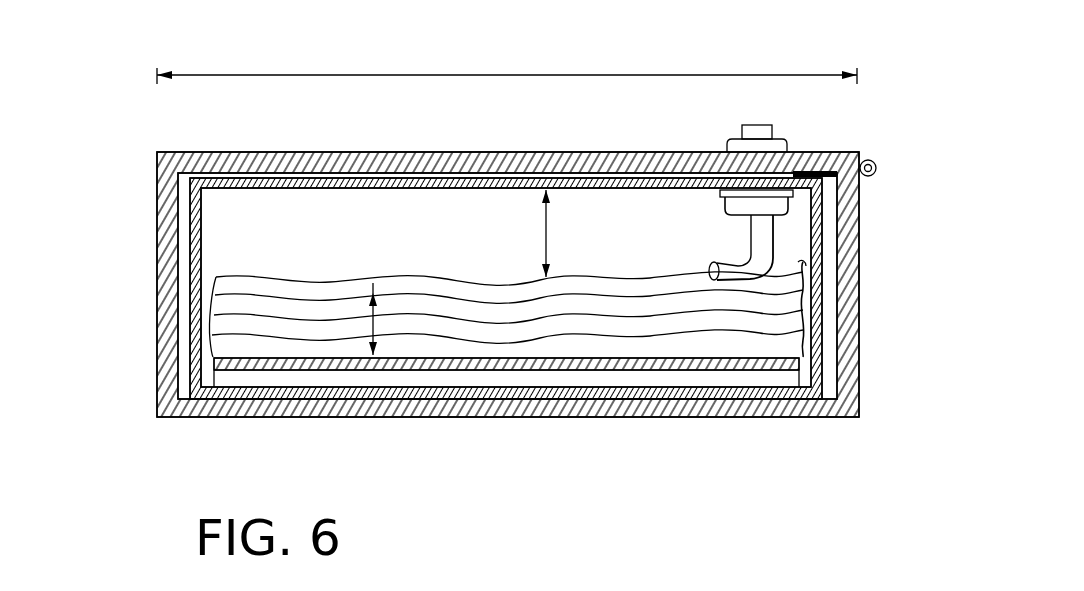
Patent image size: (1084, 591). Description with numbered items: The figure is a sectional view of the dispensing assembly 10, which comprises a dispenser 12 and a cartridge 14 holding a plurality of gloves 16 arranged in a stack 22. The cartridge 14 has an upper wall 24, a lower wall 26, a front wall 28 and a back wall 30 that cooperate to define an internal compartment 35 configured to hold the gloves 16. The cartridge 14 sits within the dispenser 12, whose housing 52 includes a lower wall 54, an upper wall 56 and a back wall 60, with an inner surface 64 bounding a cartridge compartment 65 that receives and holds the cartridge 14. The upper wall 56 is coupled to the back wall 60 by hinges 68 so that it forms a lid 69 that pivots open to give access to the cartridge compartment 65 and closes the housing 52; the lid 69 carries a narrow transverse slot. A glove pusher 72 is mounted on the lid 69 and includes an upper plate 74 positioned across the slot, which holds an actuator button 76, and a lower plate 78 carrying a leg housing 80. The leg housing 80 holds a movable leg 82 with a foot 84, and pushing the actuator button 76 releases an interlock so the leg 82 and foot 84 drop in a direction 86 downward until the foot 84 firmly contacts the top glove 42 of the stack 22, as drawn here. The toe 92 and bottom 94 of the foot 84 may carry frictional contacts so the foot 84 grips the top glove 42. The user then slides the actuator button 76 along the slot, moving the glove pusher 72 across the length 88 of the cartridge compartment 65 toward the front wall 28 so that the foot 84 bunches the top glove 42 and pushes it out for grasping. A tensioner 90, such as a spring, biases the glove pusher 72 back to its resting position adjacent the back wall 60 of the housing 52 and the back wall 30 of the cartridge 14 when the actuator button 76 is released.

The dispensing assembly 10 is at (148, 96).
The dispenser 12 is at (255, 152).
The cartridge 14 is at (195, 222).
The gloves 16 is at (312, 285).
The stack 22 is at (373, 283).
The upper wall 24 is at (440, 178).
The lower wall 26 is at (713, 380).
The front wall 28 is at (180, 373).
The back wall 30 is at (830, 308).
The internal compartment 35 is at (218, 209).
The top glove 42 is at (468, 281).
The housing 52 is at (328, 152).
The lower wall 54 is at (637, 417).
The upper wall 56 is at (385, 152).
The back wall 60 is at (862, 249).
The inner surface 64 is at (180, 333).
The cartridge compartment 65 is at (163, 288).
The hinges 68 is at (877, 166).
The lid 69 is at (562, 152).
The glove pusher 72 is at (760, 125).
The upper plate 74 is at (790, 124).
The actuator button 76 is at (742, 130).
The lower plate 78 is at (728, 196).
The leg housing 80 is at (730, 203).
The leg 82 is at (778, 235).
The foot 84 is at (743, 248).
The direction 86 is at (544, 228).
The length 88 is at (712, 70).
The tensioner 90 is at (840, 150).
The toe 92 is at (708, 266).
The bottom 94 is at (805, 275).